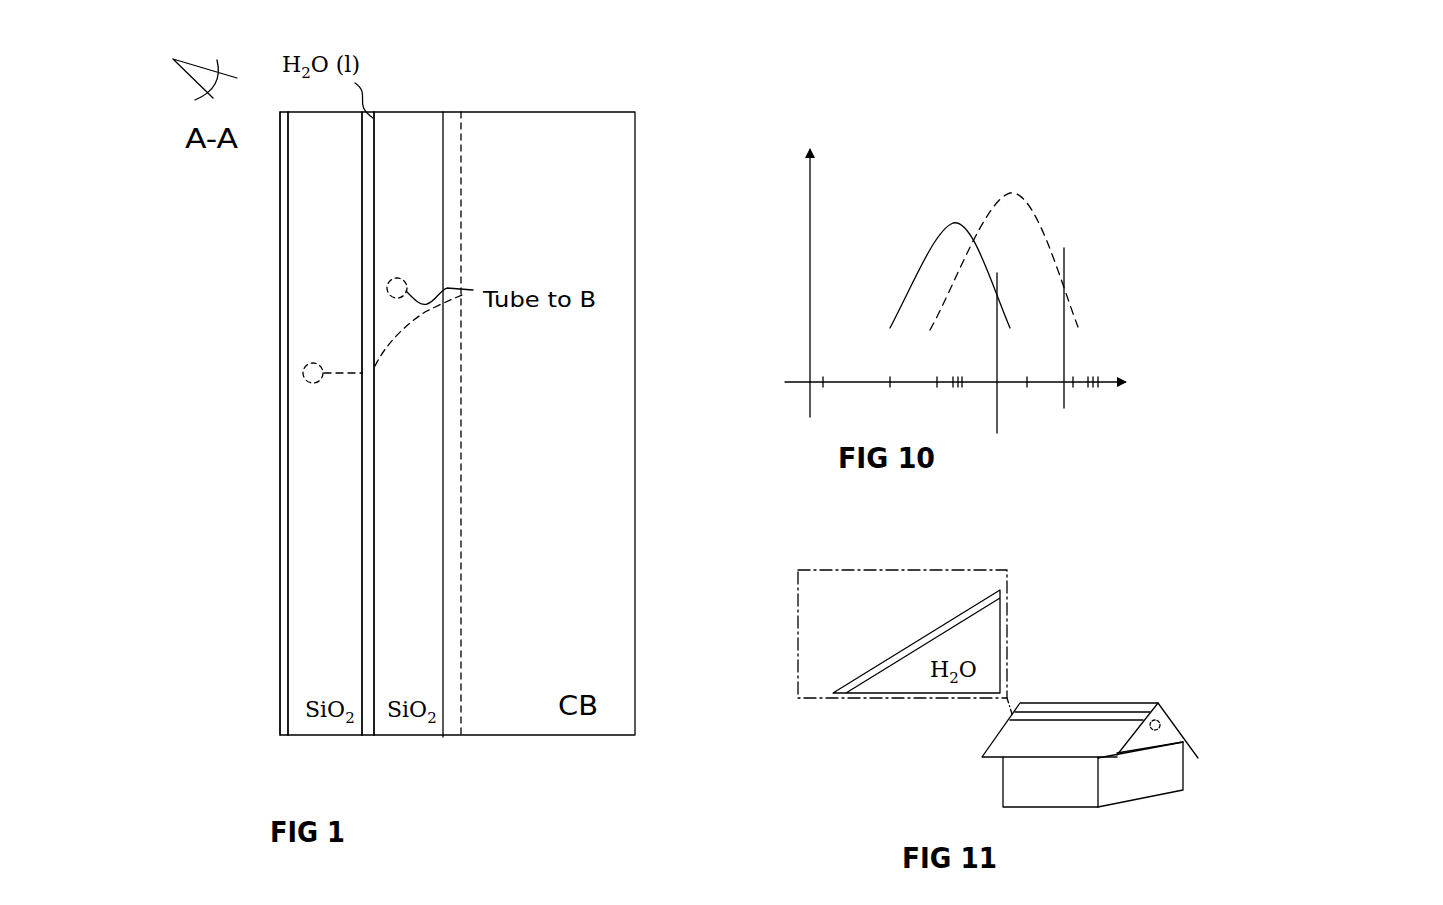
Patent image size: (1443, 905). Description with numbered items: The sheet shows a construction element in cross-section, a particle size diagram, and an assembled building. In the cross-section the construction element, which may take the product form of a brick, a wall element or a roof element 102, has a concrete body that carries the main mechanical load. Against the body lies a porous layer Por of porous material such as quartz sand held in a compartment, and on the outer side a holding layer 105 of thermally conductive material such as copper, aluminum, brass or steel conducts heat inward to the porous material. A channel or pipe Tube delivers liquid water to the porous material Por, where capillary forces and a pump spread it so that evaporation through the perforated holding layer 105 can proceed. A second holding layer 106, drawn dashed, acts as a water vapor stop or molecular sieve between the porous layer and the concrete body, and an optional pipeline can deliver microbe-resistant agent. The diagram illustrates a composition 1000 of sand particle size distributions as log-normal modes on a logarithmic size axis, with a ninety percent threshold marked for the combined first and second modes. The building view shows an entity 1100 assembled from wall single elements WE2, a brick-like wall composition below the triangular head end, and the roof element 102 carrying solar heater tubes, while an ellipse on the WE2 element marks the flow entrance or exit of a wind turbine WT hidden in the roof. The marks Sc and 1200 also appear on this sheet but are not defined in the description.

In FIG. 1, the roof element 102 is at (938, 51).
In FIG. 11, the roof element 102 is at (1090, 755).
In FIG. 1, the holding layer 105 is at (283, 705).
In FIG. 1, the second holding layer 106 is at (453, 490).
In FIG. 10, the composition of sand particle size distribution 1000 is at (1115, 253).
In FIG. 11, the entity 1100 is at (1148, 689).
In FIG. 11, the wetting element assembly 1200 is at (1125, 740).
In FIG. 1, the channel or pipe Tube is at (363, 260).
In FIG. 1, the porous layer Por is at (387, 592).
In FIG. 11, the substrate Sc is at (908, 648).
In FIG. 11, the wall single element WE2 is at (1165, 727).
In FIG. 11, the wind turbine WT is at (1160, 722).